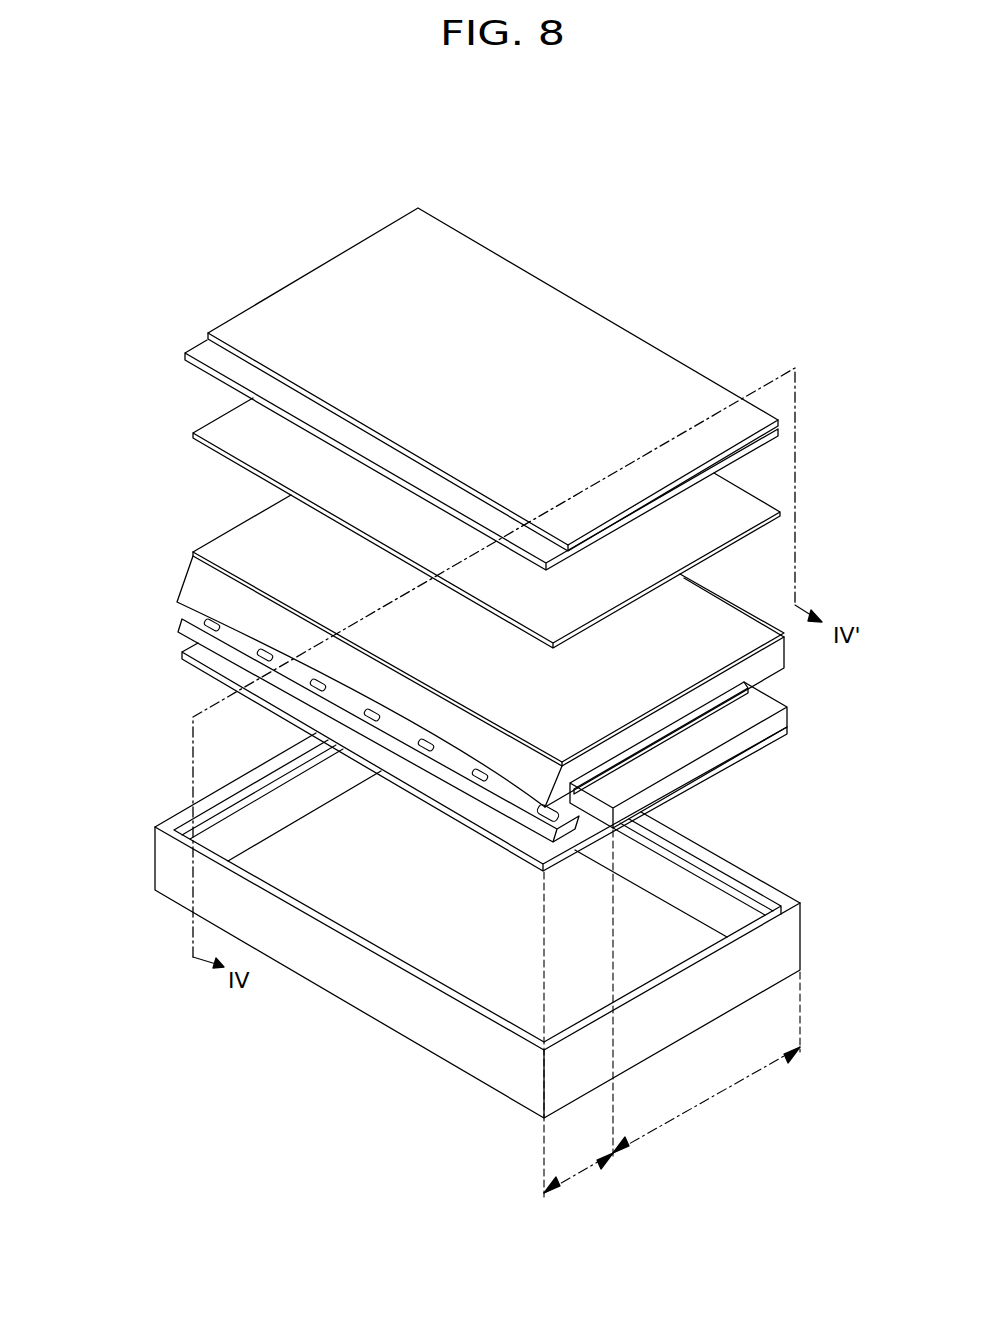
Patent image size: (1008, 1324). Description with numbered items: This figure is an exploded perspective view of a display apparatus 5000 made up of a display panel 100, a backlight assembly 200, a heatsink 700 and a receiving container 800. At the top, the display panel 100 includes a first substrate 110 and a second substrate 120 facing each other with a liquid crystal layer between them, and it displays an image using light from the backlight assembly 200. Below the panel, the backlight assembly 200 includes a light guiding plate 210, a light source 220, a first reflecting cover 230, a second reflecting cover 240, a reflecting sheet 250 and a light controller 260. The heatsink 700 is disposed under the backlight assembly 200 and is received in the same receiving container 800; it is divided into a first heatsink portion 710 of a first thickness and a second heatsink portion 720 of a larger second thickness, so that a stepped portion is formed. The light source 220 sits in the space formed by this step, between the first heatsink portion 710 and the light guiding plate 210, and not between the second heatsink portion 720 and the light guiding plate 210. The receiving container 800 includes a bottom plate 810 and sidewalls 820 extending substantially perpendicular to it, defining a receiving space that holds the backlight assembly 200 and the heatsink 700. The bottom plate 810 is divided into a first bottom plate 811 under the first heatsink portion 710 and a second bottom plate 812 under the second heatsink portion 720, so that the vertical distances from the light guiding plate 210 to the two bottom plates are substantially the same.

The display apparatus 5000 is at (483, 192).
The display panel 100 is at (120, 313).
The first substrate 110 is at (186, 352).
The second substrate 120 is at (208, 333).
The backlight assembly 200 is at (124, 440).
The light guiding plate 210 is at (265, 523).
The light source 220 is at (179, 634).
The first reflecting cover 230 is at (188, 584).
The second reflecting cover 240 is at (779, 636).
The reflecting sheet 250 is at (190, 618).
The light controller 260 is at (193, 433).
The heatsink 700 is at (848, 742).
The first heatsink portion 710 is at (640, 827).
The second heatsink portion 720 is at (713, 764).
The receiving container 800 is at (848, 815).
The bottom plate 810 is at (670, 915).
The first bottom plate 811 is at (578, 1018).
The second bottom plate 812 is at (706, 1062).
The sidewalls 820 is at (784, 929).